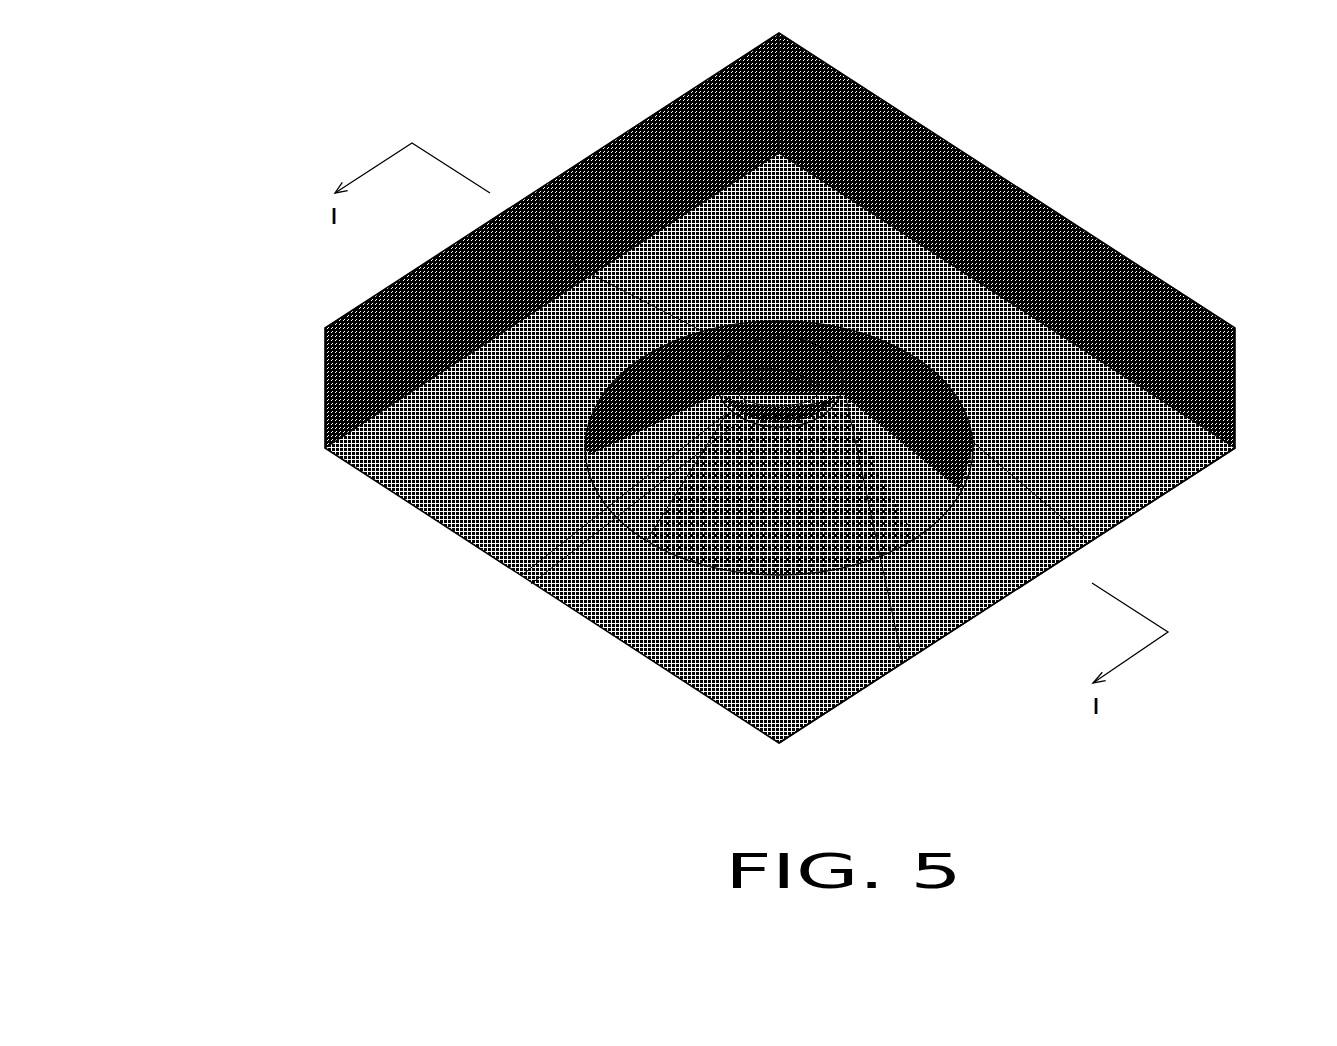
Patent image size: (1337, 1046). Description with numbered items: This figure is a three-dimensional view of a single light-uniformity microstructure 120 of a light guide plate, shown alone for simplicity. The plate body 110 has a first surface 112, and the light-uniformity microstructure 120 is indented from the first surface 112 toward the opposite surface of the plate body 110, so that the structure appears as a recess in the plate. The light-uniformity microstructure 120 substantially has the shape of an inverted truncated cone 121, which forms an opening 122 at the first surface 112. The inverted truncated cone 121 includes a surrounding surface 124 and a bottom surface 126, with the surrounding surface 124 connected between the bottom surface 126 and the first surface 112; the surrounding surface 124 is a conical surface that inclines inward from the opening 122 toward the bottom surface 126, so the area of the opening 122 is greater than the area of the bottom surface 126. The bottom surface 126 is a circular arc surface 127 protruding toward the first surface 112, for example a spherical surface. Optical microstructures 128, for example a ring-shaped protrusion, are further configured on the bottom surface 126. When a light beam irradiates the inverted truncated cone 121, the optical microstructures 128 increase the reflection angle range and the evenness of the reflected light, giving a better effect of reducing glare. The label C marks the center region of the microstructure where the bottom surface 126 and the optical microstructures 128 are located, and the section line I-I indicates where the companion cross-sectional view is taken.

The plate body 110 is at (1025, 192).
The first surface 112 is at (1149, 453).
The light-uniformity microstructure 120 is at (276, 192).
The inverted truncated cone 121 is at (1093, 536).
The opening 122 is at (747, 527).
The surrounding surface 124 is at (983, 612).
The bottom surface 126 is at (535, 193).
The circular arc surface 127 is at (903, 663).
The optical microstructure 128 is at (522, 575).
The central protrusion C is at (796, 573).